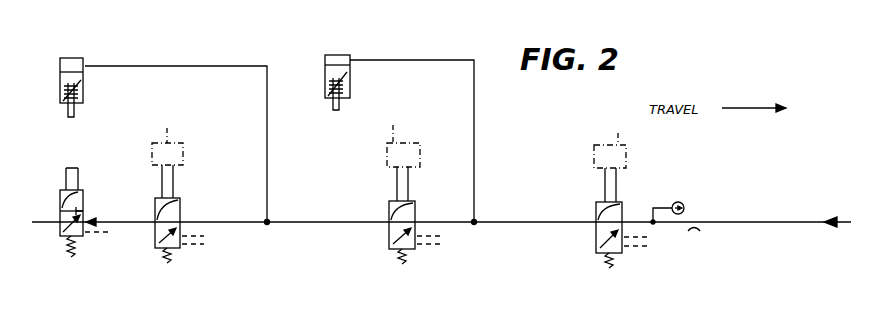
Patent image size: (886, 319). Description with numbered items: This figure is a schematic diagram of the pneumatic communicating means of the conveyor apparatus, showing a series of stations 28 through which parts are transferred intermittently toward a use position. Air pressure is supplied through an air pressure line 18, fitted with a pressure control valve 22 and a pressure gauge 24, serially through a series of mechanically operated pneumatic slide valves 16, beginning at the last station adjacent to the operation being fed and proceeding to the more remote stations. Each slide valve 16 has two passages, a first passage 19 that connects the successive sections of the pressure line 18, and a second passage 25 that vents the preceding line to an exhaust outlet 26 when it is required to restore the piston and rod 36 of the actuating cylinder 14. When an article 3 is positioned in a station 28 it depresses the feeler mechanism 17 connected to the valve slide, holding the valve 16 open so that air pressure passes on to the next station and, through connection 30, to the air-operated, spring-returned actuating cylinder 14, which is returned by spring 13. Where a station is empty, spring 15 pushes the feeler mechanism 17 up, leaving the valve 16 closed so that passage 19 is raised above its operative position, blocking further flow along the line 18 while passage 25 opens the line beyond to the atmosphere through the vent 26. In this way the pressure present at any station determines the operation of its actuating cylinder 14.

The article 3 is at (388, 141).
The spring 13 is at (83, 95).
The actuating cylinder 14 is at (77, 58).
The spring 15 is at (78, 259).
The pneumatic slide valve 16 is at (84, 197).
The feeler mechanism 17 is at (174, 172).
The air pressure line 18 is at (804, 222).
The first passage 19 is at (628, 205).
The pressure control valve 22 is at (694, 216).
The pressure gauge 24 is at (679, 201).
The second passage 25 is at (60, 244).
The exhaust outlet 26 is at (103, 234).
The station 28 is at (67, 263).
The connection 30 is at (190, 64).
The piston and rod 36 is at (69, 110).